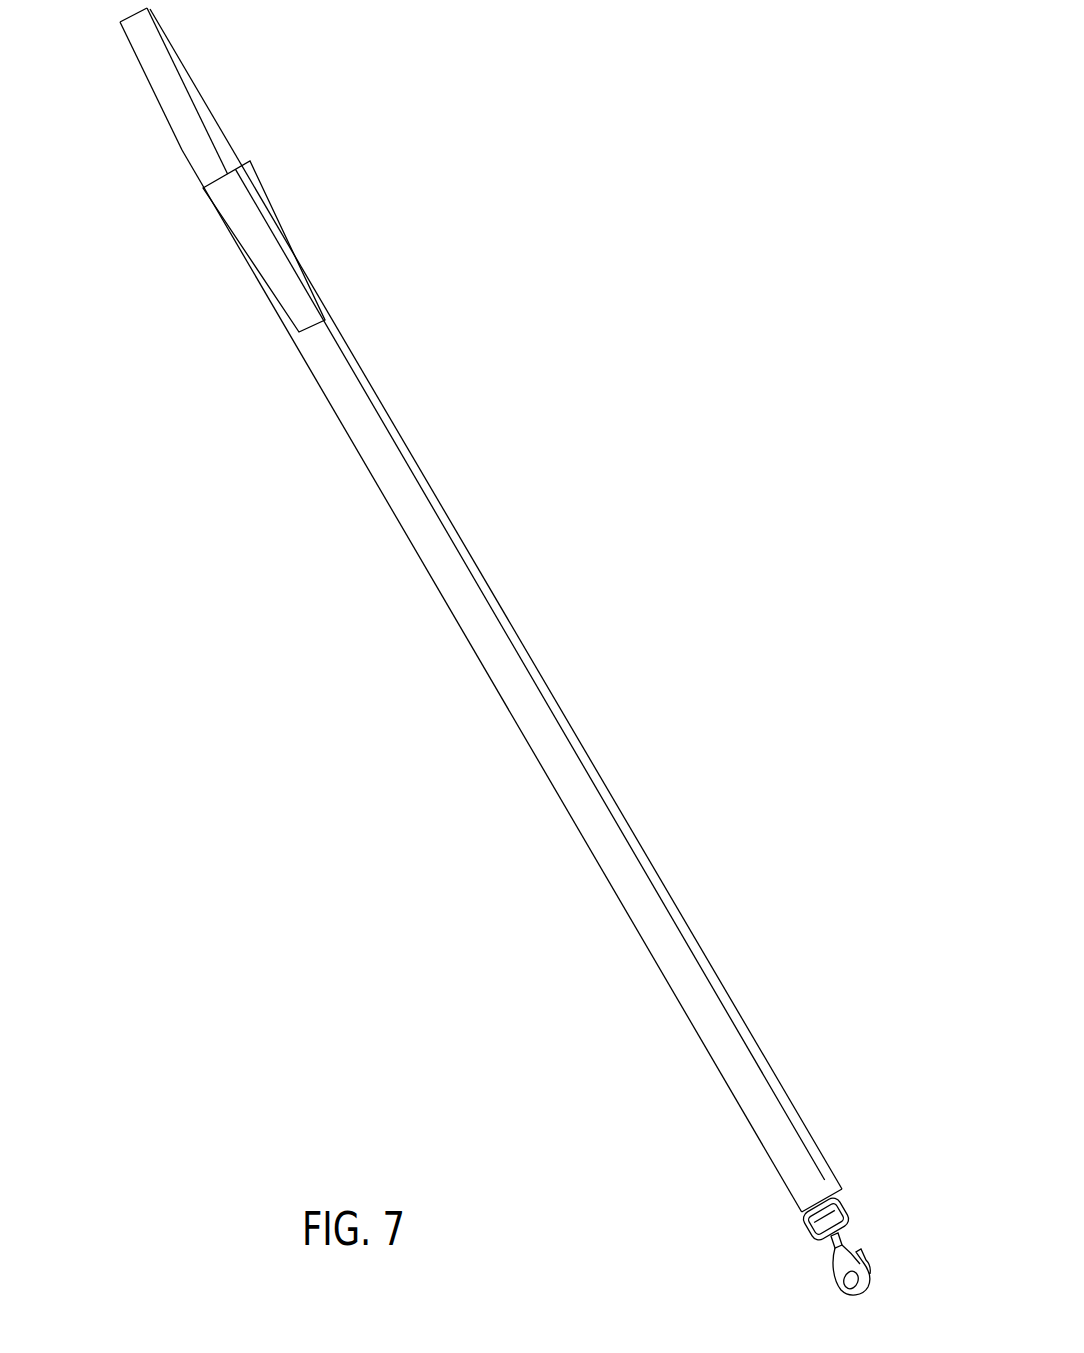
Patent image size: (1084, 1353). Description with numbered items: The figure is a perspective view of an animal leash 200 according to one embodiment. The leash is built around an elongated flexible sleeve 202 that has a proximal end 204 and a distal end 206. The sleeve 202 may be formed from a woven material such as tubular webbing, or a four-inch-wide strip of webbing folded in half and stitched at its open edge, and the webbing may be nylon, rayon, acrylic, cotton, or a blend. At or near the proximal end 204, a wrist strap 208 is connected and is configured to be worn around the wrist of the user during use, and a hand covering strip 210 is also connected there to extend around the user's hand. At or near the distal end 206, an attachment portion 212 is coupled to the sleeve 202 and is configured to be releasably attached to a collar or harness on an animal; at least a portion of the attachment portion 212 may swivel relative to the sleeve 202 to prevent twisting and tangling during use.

The animal leash 200 is at (236, 457).
The elongated flexible sleeve 202 is at (498, 681).
The proximal end 204 is at (266, 141).
The distal end 206 is at (845, 1163).
The wrist strap 208 is at (191, 136).
The hand covering strip 210 is at (273, 269).
The attachment portion 212 is at (877, 1228).